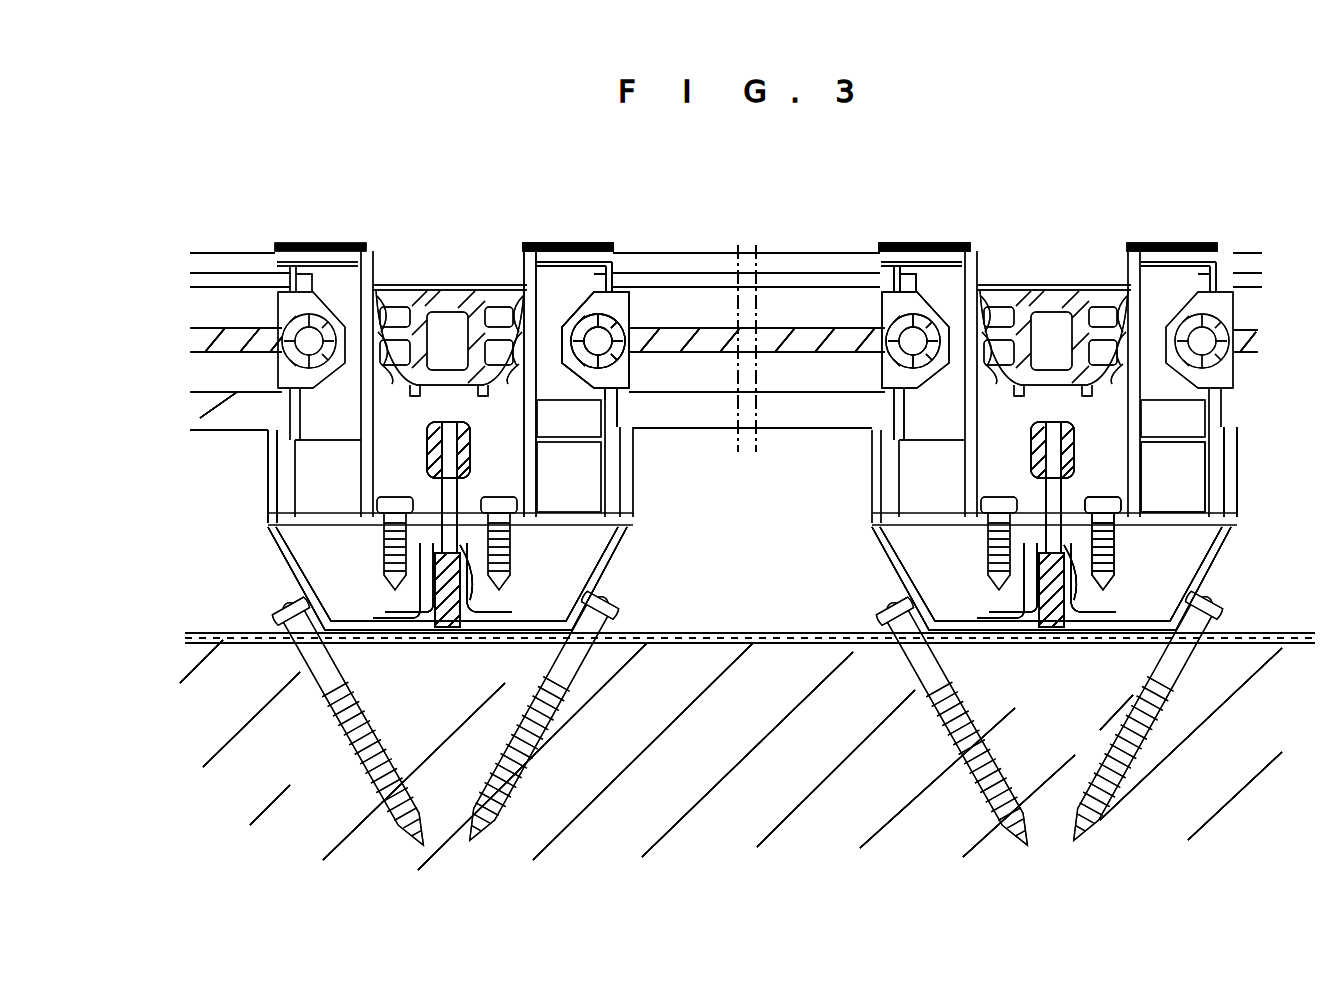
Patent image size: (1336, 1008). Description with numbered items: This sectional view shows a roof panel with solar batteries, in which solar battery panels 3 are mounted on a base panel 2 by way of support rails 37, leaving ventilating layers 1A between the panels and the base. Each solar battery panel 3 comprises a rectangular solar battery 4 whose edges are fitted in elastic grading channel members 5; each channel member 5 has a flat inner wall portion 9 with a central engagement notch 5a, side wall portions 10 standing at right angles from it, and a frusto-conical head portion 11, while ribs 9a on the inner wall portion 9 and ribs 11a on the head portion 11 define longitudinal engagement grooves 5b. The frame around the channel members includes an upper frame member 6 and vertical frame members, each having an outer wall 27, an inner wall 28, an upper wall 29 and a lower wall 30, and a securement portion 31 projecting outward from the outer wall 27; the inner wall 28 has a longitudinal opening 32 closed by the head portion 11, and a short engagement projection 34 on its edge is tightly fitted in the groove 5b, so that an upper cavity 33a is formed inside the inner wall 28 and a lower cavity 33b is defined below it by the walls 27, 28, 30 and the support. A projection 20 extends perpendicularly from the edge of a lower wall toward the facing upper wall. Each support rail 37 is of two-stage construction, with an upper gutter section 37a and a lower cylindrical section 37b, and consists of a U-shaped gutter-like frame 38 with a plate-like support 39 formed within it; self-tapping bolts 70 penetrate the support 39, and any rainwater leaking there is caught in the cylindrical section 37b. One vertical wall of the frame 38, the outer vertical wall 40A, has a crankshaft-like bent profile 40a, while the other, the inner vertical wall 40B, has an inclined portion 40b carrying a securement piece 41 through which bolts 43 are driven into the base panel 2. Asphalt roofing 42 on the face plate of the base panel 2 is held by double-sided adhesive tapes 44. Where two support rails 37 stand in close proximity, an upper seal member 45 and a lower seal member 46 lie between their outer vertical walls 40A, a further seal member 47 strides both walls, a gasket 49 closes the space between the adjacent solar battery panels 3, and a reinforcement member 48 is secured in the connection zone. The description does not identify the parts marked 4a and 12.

The ventilating layer 1A is at (770, 645).
The base panel 2 is at (722, 632).
The solar battery panel 3 is at (690, 232).
The solar battery 4 is at (1250, 328).
The panel edge 4a is at (845, 290).
The grading channel member 5 is at (668, 392).
The central engagement notch 5a is at (640, 374).
The engagement groove 5b is at (1140, 248).
The upper frame member 6 is at (715, 445).
The inner wall portion 9 is at (660, 300).
The rib 9a is at (612, 395).
The side wall portion 10 is at (522, 300).
The head portion 11 is at (536, 250).
The rib 11a is at (1171, 453).
The post 12 is at (368, 250).
The projection 20 is at (803, 430).
The outer wall 27 is at (871, 416).
The inner wall 28 is at (858, 510).
The upper wall 29 is at (940, 262).
The lower wall 30 is at (871, 477).
The securement portion 31 is at (1040, 480).
The opening 32 is at (880, 320).
The upper cavity 33a is at (985, 262).
The lower cavity 33b is at (749, 543).
The engagement projection 34 is at (840, 488).
The support rail 37 is at (1232, 568).
The gutter section 37a is at (1248, 478).
The cylindrical section 37b is at (1240, 548).
The gutter-like frame 38 is at (1238, 507).
The plate-like support 39 is at (749, 551).
The outer vertical wall 40A is at (1000, 640).
The inner vertical wall 40B is at (870, 598).
The bent profile 40a is at (1115, 642).
The inclined portion 40b is at (625, 548).
The securement piece 41 is at (1255, 632).
The asphalt roofing 42 is at (718, 640).
The bolt 43 is at (1100, 745).
The double sided adhesive tape 44 is at (1045, 645).
The upper seal member 45 is at (1070, 645).
The lower seal member 46 is at (1062, 445).
The seal member 47 is at (749, 341).
The reinforcement member 48 is at (1168, 245).
The gasket 49 is at (1065, 290).
The self-tapping bolt 70 is at (1112, 572).